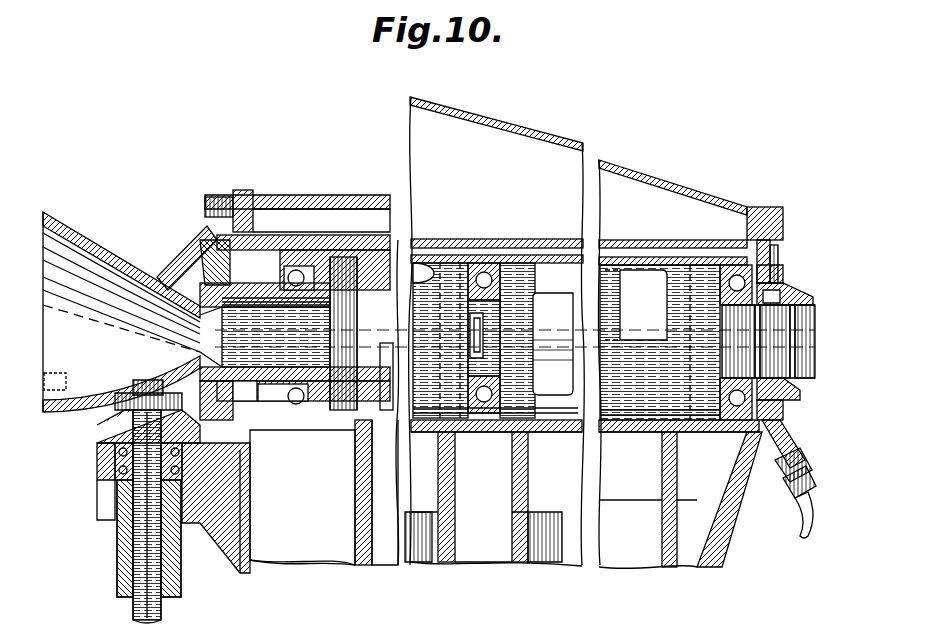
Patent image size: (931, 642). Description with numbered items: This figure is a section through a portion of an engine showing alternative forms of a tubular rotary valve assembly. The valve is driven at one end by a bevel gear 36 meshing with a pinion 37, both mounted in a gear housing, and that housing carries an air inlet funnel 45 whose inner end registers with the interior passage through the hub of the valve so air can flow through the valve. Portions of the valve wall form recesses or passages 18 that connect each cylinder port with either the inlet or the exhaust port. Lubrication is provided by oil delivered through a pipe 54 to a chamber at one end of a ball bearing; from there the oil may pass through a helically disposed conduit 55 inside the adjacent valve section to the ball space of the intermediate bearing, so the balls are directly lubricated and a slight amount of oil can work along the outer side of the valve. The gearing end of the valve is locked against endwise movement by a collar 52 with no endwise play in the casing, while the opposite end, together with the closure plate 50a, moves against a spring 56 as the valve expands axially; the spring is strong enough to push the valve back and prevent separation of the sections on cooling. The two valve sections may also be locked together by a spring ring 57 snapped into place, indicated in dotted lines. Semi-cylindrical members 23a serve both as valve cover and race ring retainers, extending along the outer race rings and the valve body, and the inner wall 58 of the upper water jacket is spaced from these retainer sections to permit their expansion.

The recesses or passages 18 is at (419, 266).
The race ring retainers 23a is at (450, 257).
The bevel gear 36 is at (220, 267).
The pinion 37 is at (92, 423).
The air inlet funnel 45 is at (107, 250).
The closure plate 50a is at (783, 282).
The collar 52 is at (277, 447).
The pipe 54 is at (800, 528).
The helically disposed conduit 55 is at (574, 293).
The spring 56 is at (780, 250).
The spring ring 57 is at (483, 335).
The inner wall 58 is at (538, 241).